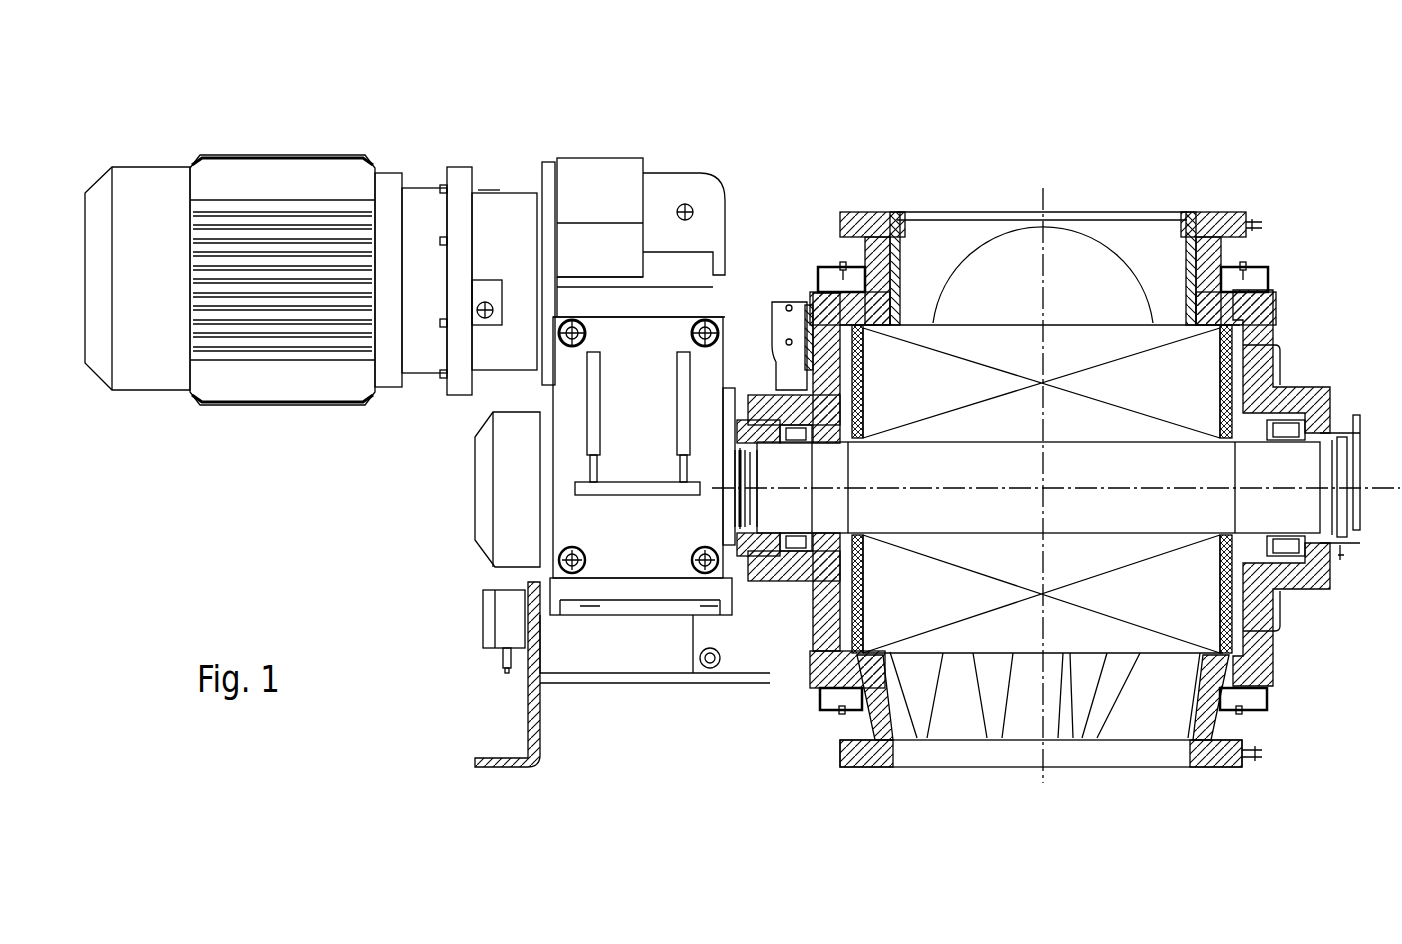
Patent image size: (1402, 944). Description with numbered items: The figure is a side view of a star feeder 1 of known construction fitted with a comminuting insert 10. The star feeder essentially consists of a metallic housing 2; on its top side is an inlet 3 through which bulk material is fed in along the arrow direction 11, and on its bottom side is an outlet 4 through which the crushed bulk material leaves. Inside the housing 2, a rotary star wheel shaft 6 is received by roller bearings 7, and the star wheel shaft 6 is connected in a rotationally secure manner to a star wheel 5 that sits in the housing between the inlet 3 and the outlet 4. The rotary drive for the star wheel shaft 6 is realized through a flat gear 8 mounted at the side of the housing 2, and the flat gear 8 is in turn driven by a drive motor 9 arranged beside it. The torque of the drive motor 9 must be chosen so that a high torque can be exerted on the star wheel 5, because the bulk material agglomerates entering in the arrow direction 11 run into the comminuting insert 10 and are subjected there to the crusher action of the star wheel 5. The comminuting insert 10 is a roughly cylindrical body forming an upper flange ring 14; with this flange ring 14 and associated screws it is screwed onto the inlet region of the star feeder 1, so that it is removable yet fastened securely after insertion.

The star feeder 1 is at (1053, 450).
The housing 2 is at (1093, 450).
The inlet 3 is at (1005, 183).
The outlet 4 is at (1122, 778).
The star wheel 5 is at (965, 637).
The star wheel shaft 6 is at (1022, 508).
The roller bearings 7 is at (790, 568).
The flat gear 8 is at (672, 300).
The drive motor 9 is at (307, 208).
The comminuting insert 10 is at (913, 245).
The arrow direction 11 is at (1043, 58).
The flange ring 14 is at (1195, 230).